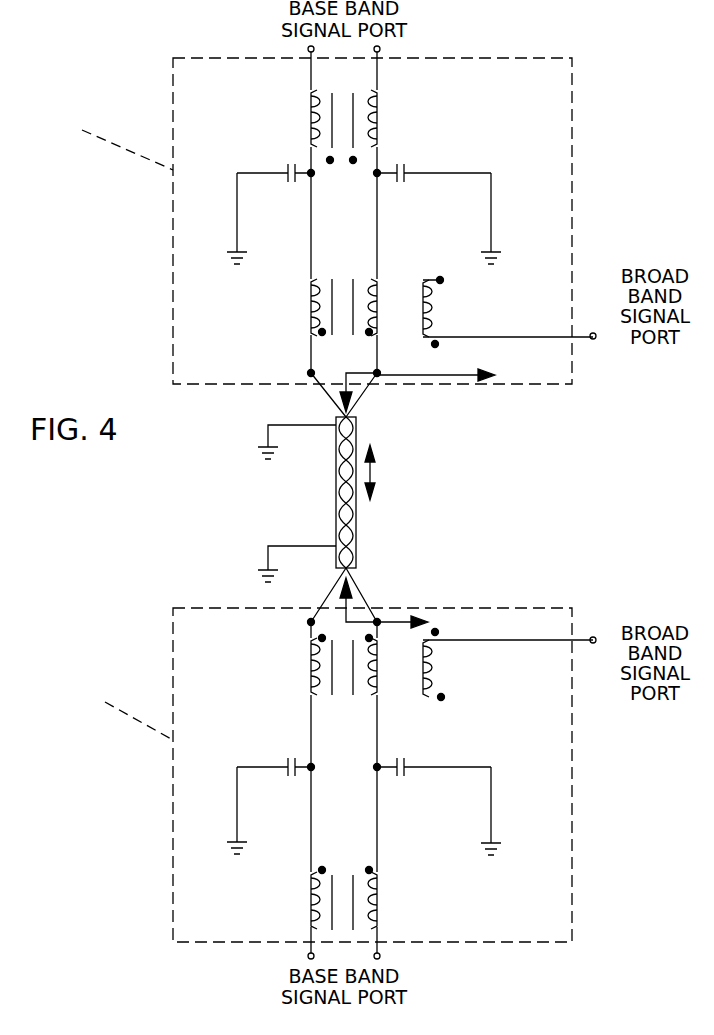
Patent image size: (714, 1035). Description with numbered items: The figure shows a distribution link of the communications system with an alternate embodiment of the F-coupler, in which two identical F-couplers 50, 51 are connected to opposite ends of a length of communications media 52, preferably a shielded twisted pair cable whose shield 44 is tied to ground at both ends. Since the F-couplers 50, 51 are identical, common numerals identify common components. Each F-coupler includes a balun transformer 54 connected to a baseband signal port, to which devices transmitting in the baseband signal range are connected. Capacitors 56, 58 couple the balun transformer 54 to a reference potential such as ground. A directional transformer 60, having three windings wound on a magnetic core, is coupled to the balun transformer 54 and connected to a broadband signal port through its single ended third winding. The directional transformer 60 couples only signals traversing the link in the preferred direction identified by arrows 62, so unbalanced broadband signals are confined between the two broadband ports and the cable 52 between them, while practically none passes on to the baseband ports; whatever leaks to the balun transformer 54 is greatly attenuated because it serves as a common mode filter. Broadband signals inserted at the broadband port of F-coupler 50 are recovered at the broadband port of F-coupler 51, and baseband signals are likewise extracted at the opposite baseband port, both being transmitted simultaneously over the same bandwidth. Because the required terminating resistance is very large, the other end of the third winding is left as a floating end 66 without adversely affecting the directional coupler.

The shield 44 is at (336, 482).
The F-coupler 50 is at (573, 162).
The F-coupler 51 is at (507, 607).
The communications media 52 is at (373, 537).
The balun transformer 54 is at (425, 107).
The capacitor 56 is at (398, 160).
The capacitor 58 is at (295, 160).
The directional transformer 60 is at (389, 276).
The arrows 62 is at (468, 374).
The floating end 66 is at (440, 280).